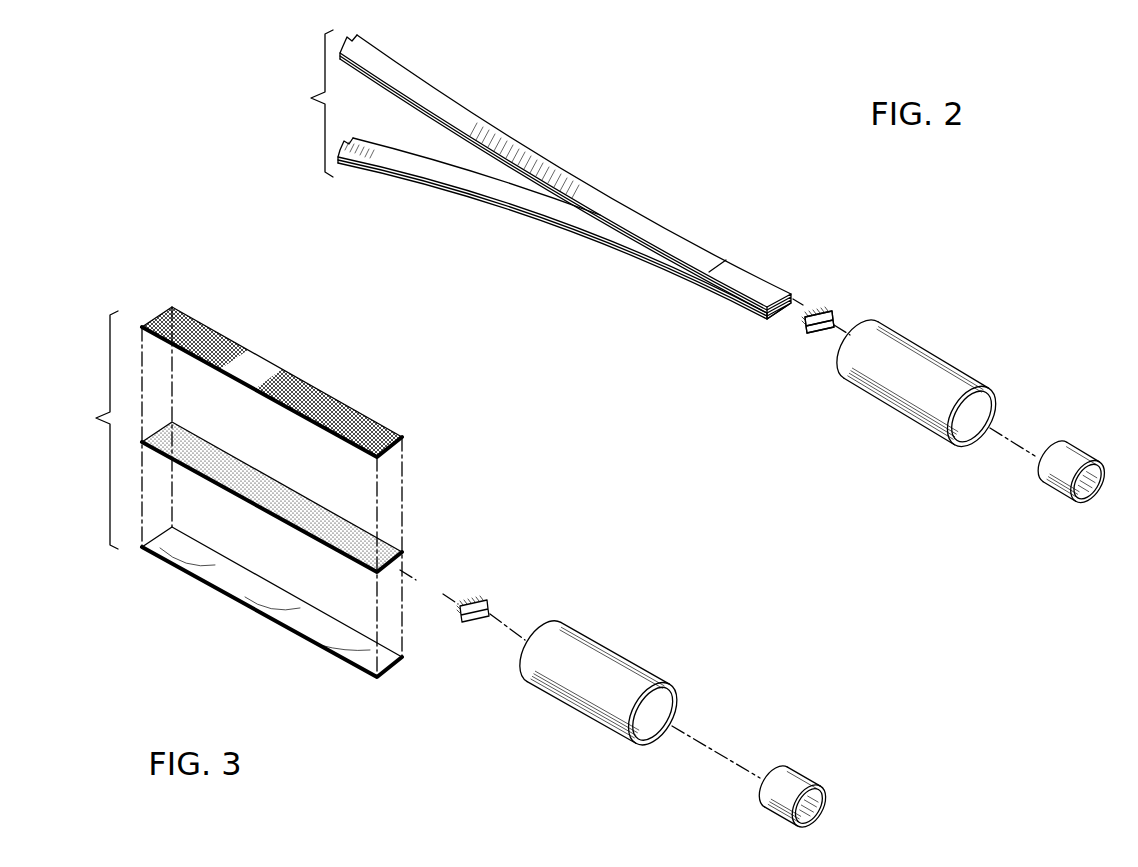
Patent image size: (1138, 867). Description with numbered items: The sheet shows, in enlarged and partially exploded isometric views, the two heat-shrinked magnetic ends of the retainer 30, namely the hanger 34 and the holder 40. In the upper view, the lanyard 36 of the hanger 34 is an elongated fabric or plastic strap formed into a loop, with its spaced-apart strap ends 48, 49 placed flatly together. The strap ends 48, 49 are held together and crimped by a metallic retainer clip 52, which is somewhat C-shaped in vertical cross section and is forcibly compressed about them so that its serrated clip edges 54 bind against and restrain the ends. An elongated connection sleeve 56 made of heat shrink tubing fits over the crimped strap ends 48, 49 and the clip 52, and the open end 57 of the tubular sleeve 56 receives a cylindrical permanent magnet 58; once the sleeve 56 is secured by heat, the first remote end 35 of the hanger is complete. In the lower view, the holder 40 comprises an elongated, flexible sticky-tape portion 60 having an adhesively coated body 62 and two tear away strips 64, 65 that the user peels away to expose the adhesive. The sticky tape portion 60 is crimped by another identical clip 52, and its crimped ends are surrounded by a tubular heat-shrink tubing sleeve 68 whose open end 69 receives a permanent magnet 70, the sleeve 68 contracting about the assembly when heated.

In FIG. 2, the retainer 30 is at (725, 322).
In FIG. 2, the hanger 34 is at (482, 112).
In FIG. 2, the remote end 35 is at (760, 233).
In FIG. 2, the lanyard 36 is at (617, 215).
In FIG. 2, the strap end 48 is at (757, 285).
In FIG. 2, the strap end 49 is at (765, 308).
In FIG. 2, the retainer clip 52 is at (817, 340).
In FIG. 3, the retainer clip 52 is at (472, 626).
In FIG. 2, the serrated clip edges 54 is at (820, 312).
In FIG. 2, the connection sleeve 56 is at (922, 338).
In FIG. 2, the open end 57 is at (972, 417).
In FIG. 2, the permanent magnet 58 is at (1082, 442).
In FIG. 2, the sticky-tape portion 60 is at (304, 103).
In FIG. 3, the sticky-tape portion 60 is at (231, 492).
In FIG. 3, the adhesively coated body 62 is at (237, 472).
In FIG. 3, the tear away strip 64 is at (225, 335).
In FIG. 3, the tear away strip 65 is at (250, 583).
In FIG. 3, the holder 40 is at (542, 592).
In FIG. 3, the heat-shrink tubing sleeve 68 is at (553, 702).
In FIG. 3, the open end 69 is at (643, 713).
In FIG. 3, the permanent magnet 70 is at (803, 762).